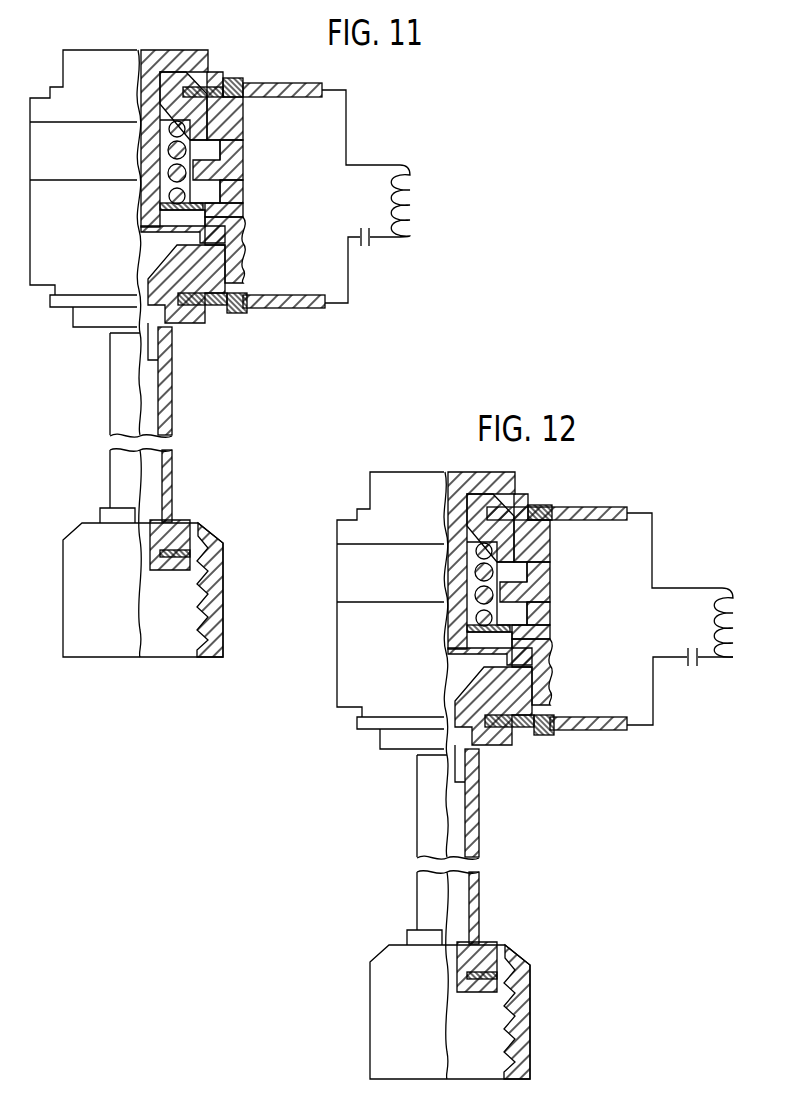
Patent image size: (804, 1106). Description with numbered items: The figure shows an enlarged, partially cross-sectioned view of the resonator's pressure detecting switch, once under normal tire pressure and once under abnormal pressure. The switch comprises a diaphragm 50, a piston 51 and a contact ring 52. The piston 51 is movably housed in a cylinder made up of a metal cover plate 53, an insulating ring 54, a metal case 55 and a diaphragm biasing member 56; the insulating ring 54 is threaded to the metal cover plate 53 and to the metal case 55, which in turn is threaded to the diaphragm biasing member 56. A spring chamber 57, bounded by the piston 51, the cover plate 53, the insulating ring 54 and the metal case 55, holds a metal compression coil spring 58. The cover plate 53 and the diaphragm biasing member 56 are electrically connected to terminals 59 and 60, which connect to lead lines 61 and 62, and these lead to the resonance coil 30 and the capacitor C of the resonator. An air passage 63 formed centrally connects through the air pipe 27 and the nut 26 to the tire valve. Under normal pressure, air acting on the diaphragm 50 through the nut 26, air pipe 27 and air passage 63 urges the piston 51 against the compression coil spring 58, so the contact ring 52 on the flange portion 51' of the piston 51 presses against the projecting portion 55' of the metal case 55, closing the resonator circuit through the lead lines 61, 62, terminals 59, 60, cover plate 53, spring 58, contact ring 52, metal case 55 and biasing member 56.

In FIG. 11, the nut 26 is at (221, 577).
In FIG. 12, the nut 26 is at (470, 1012).
In FIG. 11, the air pipe 27 is at (172, 425).
In FIG. 12, the air pipe 27 is at (493, 803).
In FIG. 11, the resonance coil 30 is at (411, 190).
In FIG. 12, the resonance coil 30 is at (714, 599).
In FIG. 11, the diaphragm 50 is at (167, 235).
In FIG. 12, the diaphragm 50 is at (518, 677).
In FIG. 11, the piston 51 is at (155, 138).
In FIG. 12, the piston 51 is at (456, 560).
In FIG. 11, the flange portion 51' is at (152, 207).
In FIG. 12, the flange portion 51' is at (458, 640).
In FIG. 11, the contact ring 52 is at (243, 257).
In FIG. 12, the contact ring 52 is at (550, 672).
In FIG. 11, the metal cover plate 53 is at (240, 110).
In FIG. 12, the metal cover plate 53 is at (551, 528).
In FIG. 11, the insulating ring 54 is at (240, 163).
In FIG. 12, the insulating ring 54 is at (544, 574).
In FIG. 11, the metal case 55 is at (244, 218).
In FIG. 12, the metal case 55 is at (550, 637).
In FIG. 11, the projecting portion 55' is at (254, 188).
In FIG. 12, the projecting portion 55' is at (561, 609).
In FIG. 11, the diaphragm biasing member 56 is at (153, 262).
In FIG. 12, the diaphragm biasing member 56 is at (469, 706).
In FIG. 11, the spring chamber 57 is at (167, 163).
In FIG. 12, the spring chamber 57 is at (445, 584).
In FIG. 11, the compression coil spring 58 is at (243, 133).
In FIG. 12, the compression coil spring 58 is at (528, 547).
In FIG. 11, the terminal 59 is at (238, 72).
In FIG. 12, the terminal 59 is at (541, 493).
In FIG. 11, the terminal 60 is at (240, 314).
In FIG. 12, the terminal 60 is at (536, 746).
In FIG. 11, the lead line 61 is at (290, 83).
In FIG. 12, the lead line 61 is at (557, 494).
In FIG. 11, the lead line 62 is at (300, 309).
In FIG. 12, the lead line 62 is at (588, 748).
In FIG. 11, the air passage 63 is at (138, 340).
In FIG. 12, the air passage 63 is at (427, 807).
In FIG. 11, the capacitor C is at (362, 224).
In FIG. 12, the capacitor C is at (680, 634).